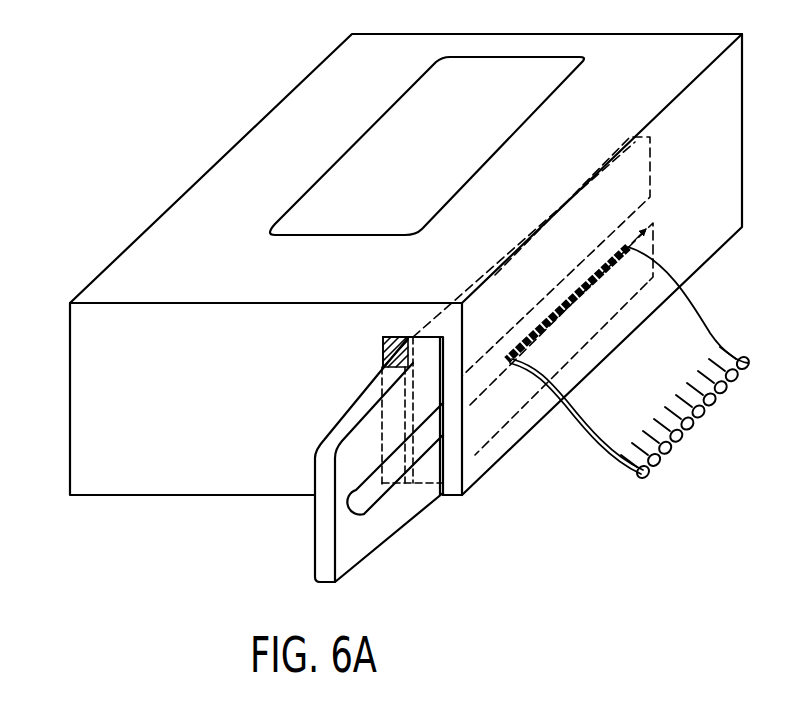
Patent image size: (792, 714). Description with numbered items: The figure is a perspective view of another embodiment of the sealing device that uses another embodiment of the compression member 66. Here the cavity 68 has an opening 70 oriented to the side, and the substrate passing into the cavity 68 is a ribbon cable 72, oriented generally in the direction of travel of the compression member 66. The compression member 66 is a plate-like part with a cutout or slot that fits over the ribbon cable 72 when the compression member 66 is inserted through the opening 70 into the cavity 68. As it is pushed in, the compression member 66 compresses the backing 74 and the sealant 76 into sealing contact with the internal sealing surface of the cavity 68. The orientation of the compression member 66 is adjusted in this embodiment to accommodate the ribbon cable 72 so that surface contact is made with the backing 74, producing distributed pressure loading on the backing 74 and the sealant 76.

The compression member 66 is at (382, 518).
The cavity 68 is at (495, 275).
The opening 70 is at (368, 375).
The ribbon cable 72 is at (708, 332).
The backing 74 is at (410, 338).
The sealant 76 is at (387, 338).